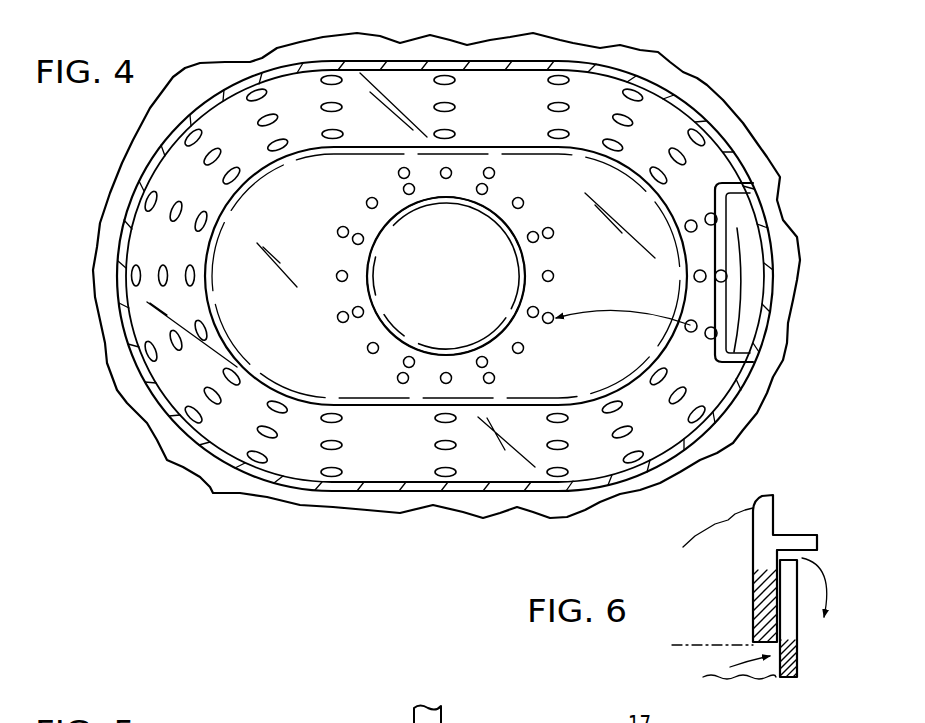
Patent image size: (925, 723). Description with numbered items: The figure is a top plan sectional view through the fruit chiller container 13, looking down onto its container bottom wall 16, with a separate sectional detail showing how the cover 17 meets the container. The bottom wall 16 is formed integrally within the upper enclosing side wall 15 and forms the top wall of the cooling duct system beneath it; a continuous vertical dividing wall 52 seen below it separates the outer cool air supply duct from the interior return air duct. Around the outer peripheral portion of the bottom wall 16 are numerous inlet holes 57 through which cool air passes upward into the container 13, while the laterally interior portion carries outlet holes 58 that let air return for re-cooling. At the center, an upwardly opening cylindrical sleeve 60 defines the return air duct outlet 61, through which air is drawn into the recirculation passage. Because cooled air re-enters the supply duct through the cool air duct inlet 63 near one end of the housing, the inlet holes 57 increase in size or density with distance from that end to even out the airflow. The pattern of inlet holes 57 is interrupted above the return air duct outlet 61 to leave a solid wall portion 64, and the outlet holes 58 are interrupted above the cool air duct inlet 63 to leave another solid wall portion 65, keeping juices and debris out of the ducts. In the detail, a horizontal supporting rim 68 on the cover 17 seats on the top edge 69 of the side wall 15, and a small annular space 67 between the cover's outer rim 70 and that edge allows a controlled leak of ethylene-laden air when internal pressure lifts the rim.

In FIG. 4, the container 13 is at (670, 86).
In FIG. 6, the container 13 is at (804, 652).
In FIG. 4, the upper enclosing side wall 15 is at (509, 66).
In FIG. 4, the container bottom wall 16 is at (403, 93).
In FIG. 6, the cover 17 is at (769, 511).
In FIG. 4, the dividing wall 52 is at (350, 155).
In FIG. 4, the inlet holes 57 is at (197, 410).
In FIG. 4, the outlet holes 58 is at (548, 227).
In FIG. 4, the cylindrical sleeve 60 is at (450, 204).
In FIG. 4, the return air duct outlet 61 is at (378, 276).
In FIG. 4, the cool air duct inlet 63 is at (751, 222).
In FIG. 4, the solid wall portion 64 is at (755, 287).
In FIG. 4, the solid wall portion 65 is at (448, 299).
In FIG. 6, the annular space 67 is at (770, 628).
In FIG. 6, the horizontal supporting rim 68 is at (799, 542).
In FIG. 6, the top edge 69 is at (791, 576).
In FIG. 6, the outer rim 70 is at (762, 585).